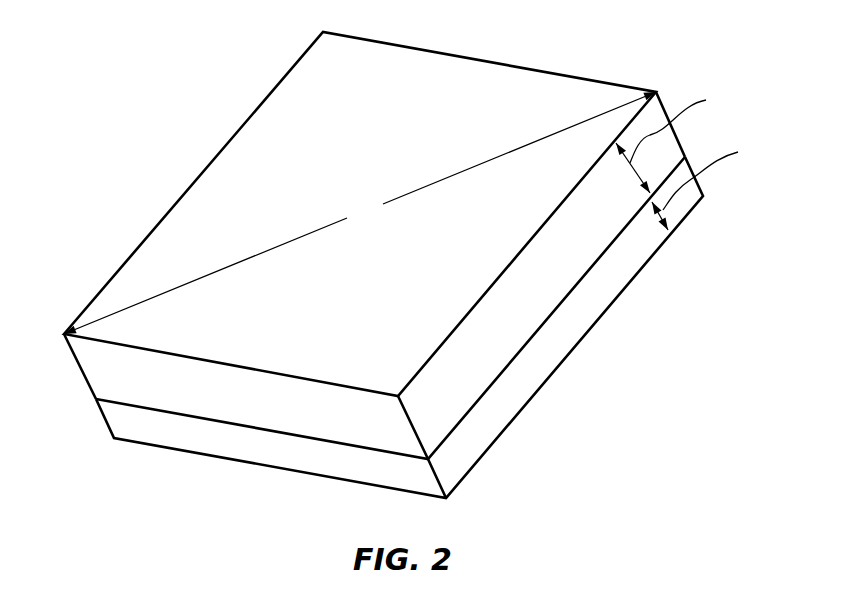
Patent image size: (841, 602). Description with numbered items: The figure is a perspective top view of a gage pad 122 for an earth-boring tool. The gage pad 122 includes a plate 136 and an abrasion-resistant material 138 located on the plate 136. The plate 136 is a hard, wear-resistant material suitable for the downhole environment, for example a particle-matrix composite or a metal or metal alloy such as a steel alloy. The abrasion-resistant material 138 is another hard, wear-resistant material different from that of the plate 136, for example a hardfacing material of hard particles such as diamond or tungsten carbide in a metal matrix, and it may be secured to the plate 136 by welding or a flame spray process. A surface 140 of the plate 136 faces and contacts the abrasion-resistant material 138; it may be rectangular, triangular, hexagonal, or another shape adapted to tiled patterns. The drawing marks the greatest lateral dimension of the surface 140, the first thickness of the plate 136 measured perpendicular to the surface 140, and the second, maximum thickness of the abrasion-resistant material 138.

The gage pad 122 is at (180, 75).
The abrasion-resistant material 138 is at (152, 262).
The plate 136 is at (592, 295).
The surface 140 is at (472, 400).